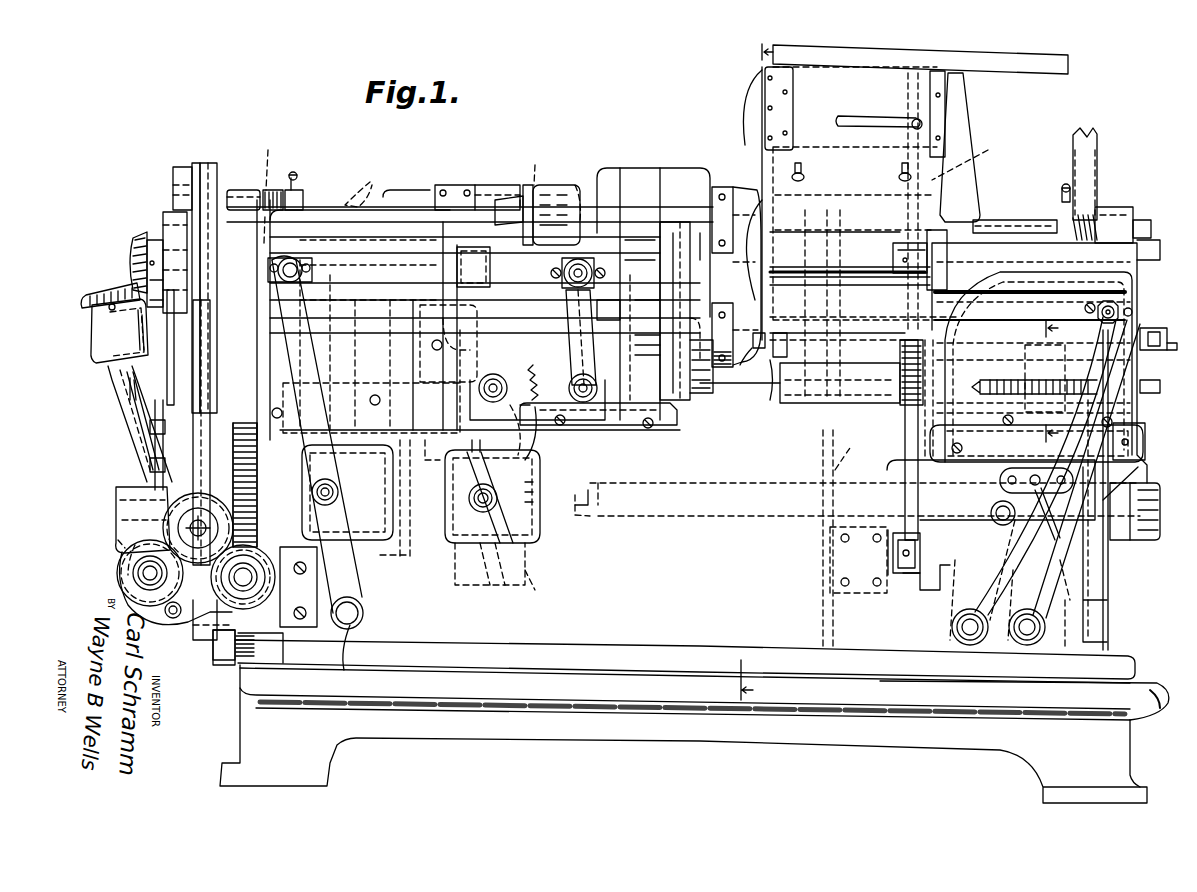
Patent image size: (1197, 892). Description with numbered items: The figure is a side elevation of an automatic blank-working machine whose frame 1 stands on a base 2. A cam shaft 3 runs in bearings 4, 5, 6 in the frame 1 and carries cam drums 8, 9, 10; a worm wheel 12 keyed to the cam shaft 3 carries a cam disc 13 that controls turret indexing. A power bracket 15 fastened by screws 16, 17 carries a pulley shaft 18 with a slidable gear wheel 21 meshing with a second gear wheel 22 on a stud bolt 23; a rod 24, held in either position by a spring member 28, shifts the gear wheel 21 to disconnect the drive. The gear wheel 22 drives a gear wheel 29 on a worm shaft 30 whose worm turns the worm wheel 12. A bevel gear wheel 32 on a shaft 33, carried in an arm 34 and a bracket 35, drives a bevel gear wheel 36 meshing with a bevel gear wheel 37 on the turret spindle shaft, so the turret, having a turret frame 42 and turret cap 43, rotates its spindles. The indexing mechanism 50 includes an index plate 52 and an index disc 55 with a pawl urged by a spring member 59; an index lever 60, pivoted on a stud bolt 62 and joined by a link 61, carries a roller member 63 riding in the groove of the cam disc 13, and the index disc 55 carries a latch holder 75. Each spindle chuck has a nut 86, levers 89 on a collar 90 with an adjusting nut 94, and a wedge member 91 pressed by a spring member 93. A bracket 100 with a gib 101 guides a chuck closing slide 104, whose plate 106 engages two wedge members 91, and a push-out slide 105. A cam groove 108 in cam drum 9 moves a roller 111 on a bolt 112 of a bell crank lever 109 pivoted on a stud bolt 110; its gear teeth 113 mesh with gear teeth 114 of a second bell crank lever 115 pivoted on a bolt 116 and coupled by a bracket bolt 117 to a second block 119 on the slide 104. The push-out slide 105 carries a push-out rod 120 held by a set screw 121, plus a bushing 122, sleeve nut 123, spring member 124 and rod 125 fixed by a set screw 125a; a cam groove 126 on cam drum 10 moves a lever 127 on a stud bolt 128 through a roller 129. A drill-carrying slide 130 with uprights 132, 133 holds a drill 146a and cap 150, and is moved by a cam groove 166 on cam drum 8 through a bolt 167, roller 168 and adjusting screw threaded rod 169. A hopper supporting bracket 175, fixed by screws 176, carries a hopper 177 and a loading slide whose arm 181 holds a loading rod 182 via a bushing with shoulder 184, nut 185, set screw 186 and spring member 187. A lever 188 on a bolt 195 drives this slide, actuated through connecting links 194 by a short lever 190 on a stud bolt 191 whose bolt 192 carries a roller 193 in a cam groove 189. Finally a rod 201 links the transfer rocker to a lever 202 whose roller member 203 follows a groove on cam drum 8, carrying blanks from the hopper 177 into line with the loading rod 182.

The frame 1 is at (1112, 640).
The base 2 is at (1022, 754).
The cam shaft 3 is at (700, 520).
The bearing 4 is at (1158, 473).
The bearing 5 is at (855, 540).
The bearing 6 is at (432, 447).
The cam drum 8 is at (1091, 588).
The cam drum 9 is at (791, 459).
The cam drum 10 is at (409, 512).
The worm wheel 12 is at (258, 425).
The cam disc 13 is at (207, 395).
The power bracket 15 is at (203, 640).
The screw 16 is at (225, 654).
The screw 17 is at (300, 628).
The pulley shaft 18 is at (133, 572).
The gear wheel 21 is at (118, 580).
The second gear wheel 22 is at (163, 515).
The stud bolt 23 is at (190, 527).
The rod 24 is at (174, 618).
The spring member 28 is at (232, 590).
The gear wheel 29 is at (262, 548).
The worm shaft 30 is at (243, 590).
The bevel gear wheel 32 is at (120, 548).
The shaft 33 is at (112, 425).
The arm 34 is at (118, 490).
The bracket 35 is at (92, 355).
The bevel gear wheel 36 is at (104, 280).
The bevel gear wheel 37 is at (137, 236).
The turret frame 42 is at (614, 168).
The turret cap 43 is at (668, 168).
The indexing mechanism 50 is at (165, 183).
The index plate 52 is at (210, 163).
The index disc 55 is at (197, 163).
The spring member 59 is at (165, 215).
The index lever 60 is at (162, 498).
The link 61 is at (167, 335).
The stud bolt 62 is at (176, 420).
The roller member 63 is at (185, 440).
The latch holder 75 is at (180, 167).
The nut 86 is at (720, 187).
The lever 89 is at (480, 190).
The collar 90 is at (462, 185).
The wedge member 91 is at (528, 185).
The spring member 93 is at (570, 185).
The adjusting nut 94 is at (440, 185).
The bracket 100 is at (700, 398).
The gib 101 is at (406, 188).
The chuck closing slide 104 is at (540, 185).
The push-out slide 105 is at (240, 190).
The plate 106 is at (546, 152).
The cam groove 108 is at (497, 605).
The bell crank lever 109 is at (525, 470).
The stud bolt 110 is at (470, 320).
The roller 111 is at (502, 498).
The bolt 112 is at (498, 518).
The gear teeth 113 is at (545, 448).
The gear teeth 114 is at (580, 445).
The second bell crank lever 115 is at (592, 345).
The bolt 116 is at (554, 392).
The bracket bolt 117 is at (585, 262).
The second block 119 is at (551, 270).
The push-out rod 120 is at (395, 345).
The set screw 121 is at (253, 366).
The bushing 122 is at (271, 186).
The sleeve nut 123 is at (305, 196).
The spring member 124 is at (273, 190).
The rod 125 is at (368, 184).
The set screw 125a is at (297, 178).
The cam groove 126 is at (365, 615).
The lever 127 is at (325, 375).
The stud bolt 128 is at (363, 657).
The roller 129 is at (347, 492).
The drill-carrying slide 130 is at (832, 420).
The upright 132 is at (812, 178).
The upright 133 is at (926, 148).
The drill 146a is at (743, 362).
The cap 150 is at (767, 376).
The cam groove 166 is at (1071, 625).
The bolt 167 is at (1018, 348).
The roller 168 is at (1008, 437).
The screw threaded rod 169 is at (1150, 395).
The hopper supporting bracket 175 is at (1143, 357).
The screw 176 is at (1160, 445).
The hopper 177 is at (958, 116).
The arm 181 is at (1115, 207).
The loading rod 182 is at (1015, 220).
The shoulder 184 is at (1148, 222).
The nut 185 is at (1060, 198).
The set screw 186 is at (1070, 195).
The spring member 187 is at (1092, 210).
The lever 188 is at (1060, 553).
The cam groove 189 is at (955, 605).
The short lever 190 is at (1000, 543).
The stud bolt 191 is at (968, 645).
The bolt 192 is at (990, 513).
The roller 193 is at (1000, 492).
The connecting links 194 is at (1030, 554).
The bolt 195 is at (1032, 645).
The rod 201 is at (906, 460).
The lever 202 is at (890, 593).
The roller member 203 is at (905, 593).